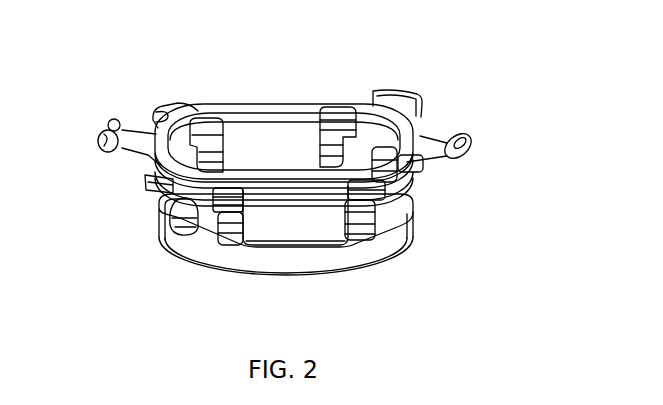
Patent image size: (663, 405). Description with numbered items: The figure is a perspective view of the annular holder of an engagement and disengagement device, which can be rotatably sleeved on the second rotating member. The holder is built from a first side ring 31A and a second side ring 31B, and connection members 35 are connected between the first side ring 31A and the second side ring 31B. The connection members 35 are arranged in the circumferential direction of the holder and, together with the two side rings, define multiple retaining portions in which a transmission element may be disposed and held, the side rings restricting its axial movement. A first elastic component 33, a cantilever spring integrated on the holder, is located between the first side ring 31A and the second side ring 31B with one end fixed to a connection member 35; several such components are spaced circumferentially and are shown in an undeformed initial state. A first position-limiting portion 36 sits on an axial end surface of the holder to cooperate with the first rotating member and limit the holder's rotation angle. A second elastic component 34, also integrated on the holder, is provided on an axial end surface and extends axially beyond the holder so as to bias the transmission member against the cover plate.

The first side ring 31A is at (417, 127).
The second side ring 31B is at (399, 236).
The first elastic component 33 is at (200, 214).
The second elastic component 34 is at (114, 119).
The connection members 35 is at (371, 118).
The first position-limiting portion 36 is at (174, 103).